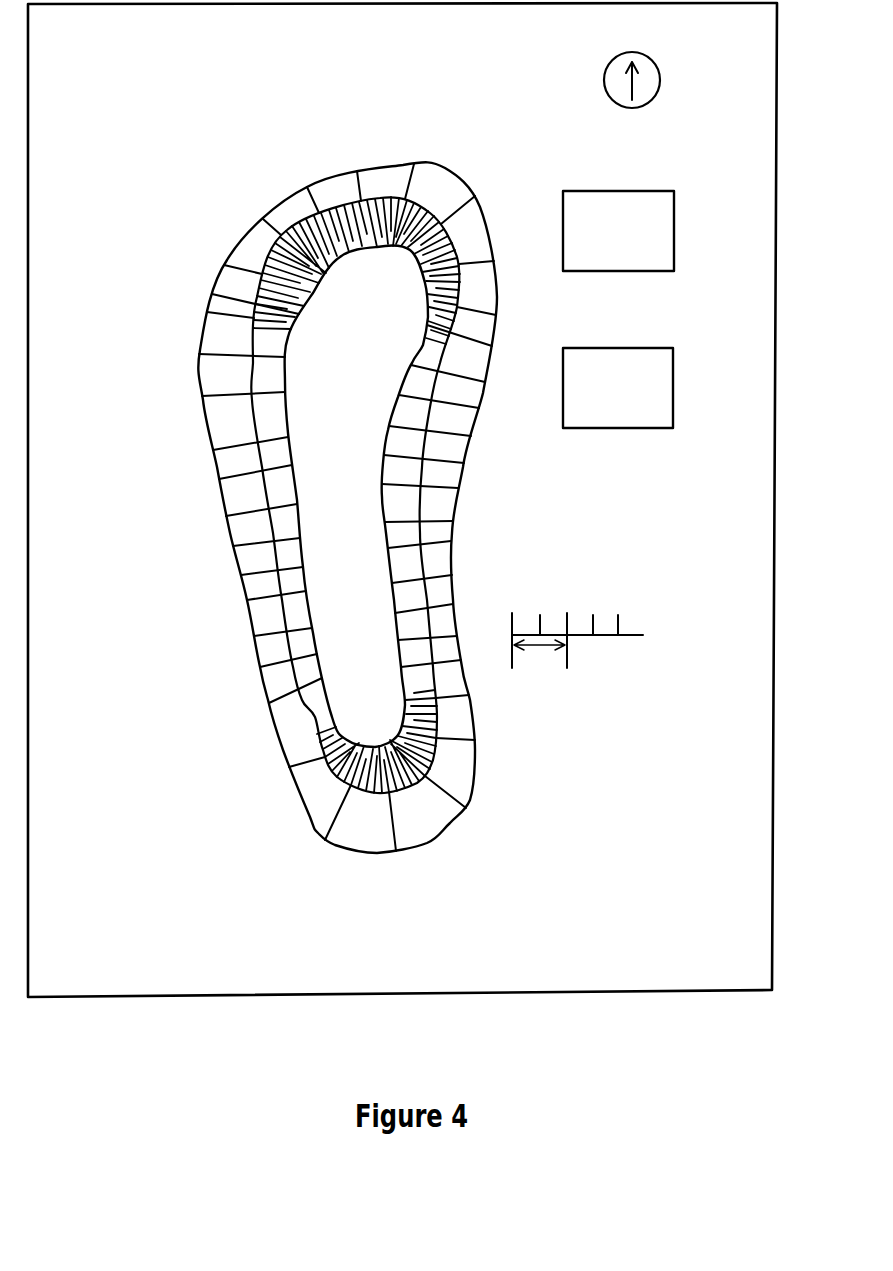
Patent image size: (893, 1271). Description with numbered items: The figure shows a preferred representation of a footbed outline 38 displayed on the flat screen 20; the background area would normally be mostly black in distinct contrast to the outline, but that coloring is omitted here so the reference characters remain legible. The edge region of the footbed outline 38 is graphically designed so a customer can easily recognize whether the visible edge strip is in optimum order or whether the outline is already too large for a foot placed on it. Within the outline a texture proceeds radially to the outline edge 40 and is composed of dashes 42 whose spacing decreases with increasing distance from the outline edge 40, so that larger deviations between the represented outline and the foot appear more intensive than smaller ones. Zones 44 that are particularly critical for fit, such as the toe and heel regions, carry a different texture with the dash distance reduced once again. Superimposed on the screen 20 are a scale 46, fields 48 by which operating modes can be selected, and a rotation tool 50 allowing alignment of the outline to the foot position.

The flat screen 20 is at (560, 993).
The footbed outline 38 is at (254, 771).
The outline edge 40 is at (203, 425).
The dashes 42 is at (420, 657).
The zones 44 is at (410, 778).
The scale 46 is at (644, 616).
The fields 48 is at (598, 271).
The rotation tool 50 is at (644, 108).